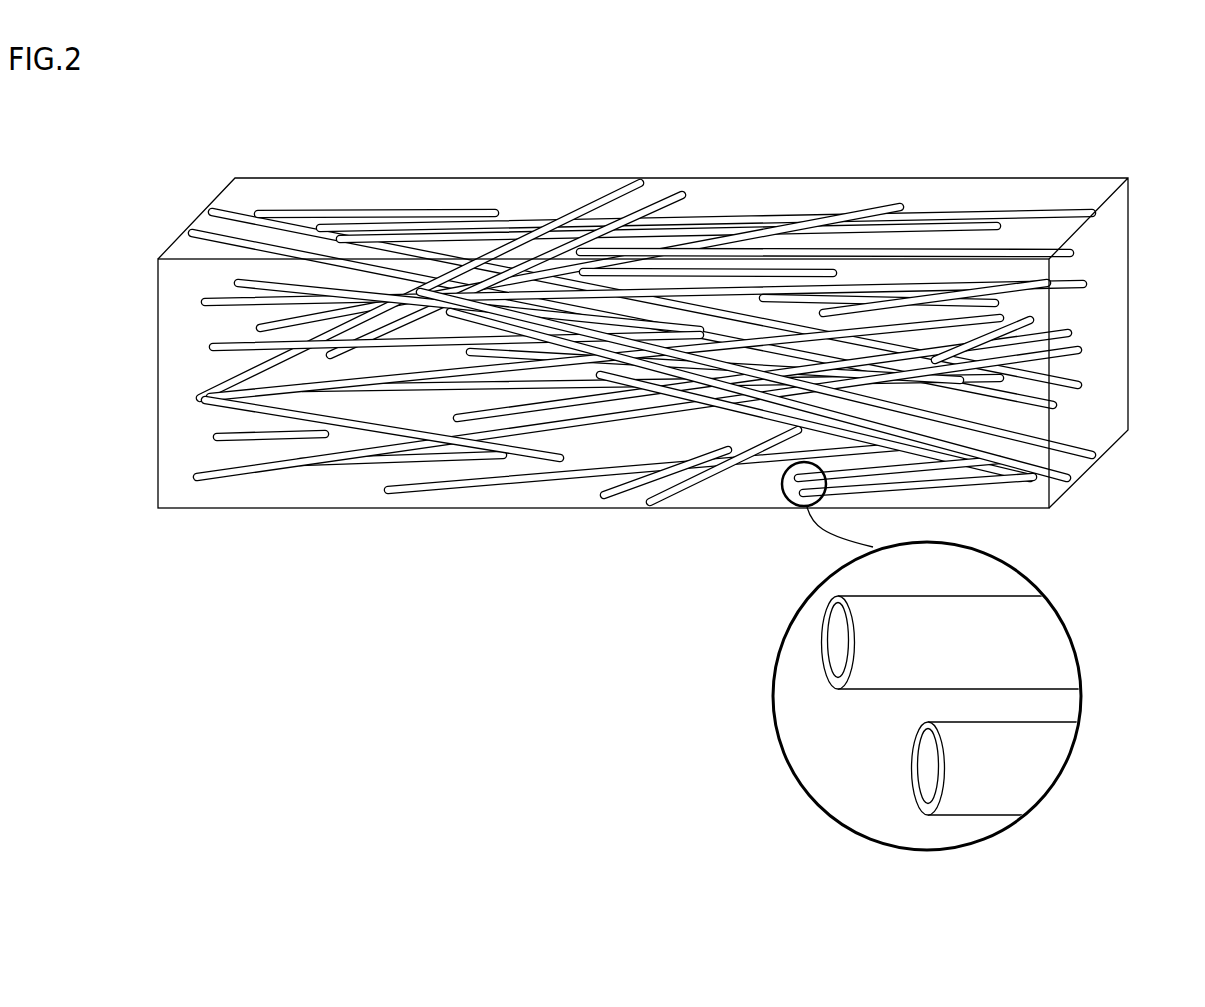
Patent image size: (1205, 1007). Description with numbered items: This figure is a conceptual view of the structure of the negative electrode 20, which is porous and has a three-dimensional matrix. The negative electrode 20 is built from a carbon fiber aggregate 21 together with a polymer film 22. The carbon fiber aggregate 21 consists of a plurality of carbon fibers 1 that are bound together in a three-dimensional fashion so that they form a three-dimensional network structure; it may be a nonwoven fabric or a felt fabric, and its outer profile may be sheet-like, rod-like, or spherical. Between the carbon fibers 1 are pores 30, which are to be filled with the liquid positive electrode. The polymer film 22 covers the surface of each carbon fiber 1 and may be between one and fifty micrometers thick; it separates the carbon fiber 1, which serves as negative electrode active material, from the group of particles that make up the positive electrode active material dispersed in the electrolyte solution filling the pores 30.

The negative electrode 20 is at (660, 469).
The carbon fiber aggregate 21 is at (605, 193).
The polymer film 22 is at (1015, 625).
The carbon fiber 1 is at (833, 647).
The pore 30 is at (285, 195).